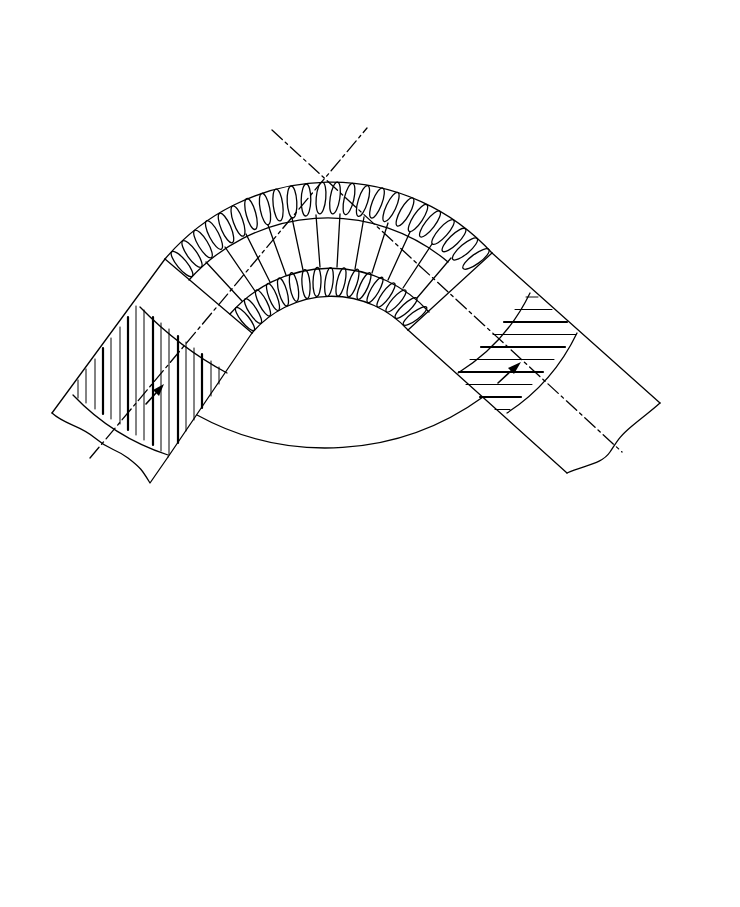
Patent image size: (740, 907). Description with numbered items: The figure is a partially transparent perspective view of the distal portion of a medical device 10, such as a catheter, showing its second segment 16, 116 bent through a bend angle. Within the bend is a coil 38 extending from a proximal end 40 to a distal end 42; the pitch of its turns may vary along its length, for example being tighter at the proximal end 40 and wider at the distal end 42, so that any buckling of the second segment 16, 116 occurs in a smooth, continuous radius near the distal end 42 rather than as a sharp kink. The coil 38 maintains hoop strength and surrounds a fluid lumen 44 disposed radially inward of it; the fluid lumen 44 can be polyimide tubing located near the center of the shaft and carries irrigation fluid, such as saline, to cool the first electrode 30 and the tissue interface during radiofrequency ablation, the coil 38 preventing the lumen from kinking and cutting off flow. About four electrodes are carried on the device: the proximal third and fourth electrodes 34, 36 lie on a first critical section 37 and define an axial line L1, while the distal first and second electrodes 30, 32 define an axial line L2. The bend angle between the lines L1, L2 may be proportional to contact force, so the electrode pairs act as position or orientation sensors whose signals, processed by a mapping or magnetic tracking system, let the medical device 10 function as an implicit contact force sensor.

The medical device 10 is at (486, 176).
The second segment 16 is at (176, 103).
The second segment 116 is at (293, 244).
The first electrode 30 is at (538, 447).
The second electrode 32 is at (445, 357).
The third electrode 34 is at (254, 353).
The fourth electrode 36 is at (156, 474).
The first critical section 37 is at (87, 325).
The coil 38 is at (343, 195).
The proximal end of coil 40 is at (170, 262).
The distal end of coil 42 is at (491, 256).
The fluid lumen 44 is at (362, 232).
The axial line L1 is at (92, 458).
The axial line L2 is at (613, 440).